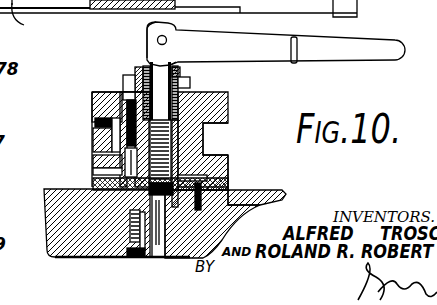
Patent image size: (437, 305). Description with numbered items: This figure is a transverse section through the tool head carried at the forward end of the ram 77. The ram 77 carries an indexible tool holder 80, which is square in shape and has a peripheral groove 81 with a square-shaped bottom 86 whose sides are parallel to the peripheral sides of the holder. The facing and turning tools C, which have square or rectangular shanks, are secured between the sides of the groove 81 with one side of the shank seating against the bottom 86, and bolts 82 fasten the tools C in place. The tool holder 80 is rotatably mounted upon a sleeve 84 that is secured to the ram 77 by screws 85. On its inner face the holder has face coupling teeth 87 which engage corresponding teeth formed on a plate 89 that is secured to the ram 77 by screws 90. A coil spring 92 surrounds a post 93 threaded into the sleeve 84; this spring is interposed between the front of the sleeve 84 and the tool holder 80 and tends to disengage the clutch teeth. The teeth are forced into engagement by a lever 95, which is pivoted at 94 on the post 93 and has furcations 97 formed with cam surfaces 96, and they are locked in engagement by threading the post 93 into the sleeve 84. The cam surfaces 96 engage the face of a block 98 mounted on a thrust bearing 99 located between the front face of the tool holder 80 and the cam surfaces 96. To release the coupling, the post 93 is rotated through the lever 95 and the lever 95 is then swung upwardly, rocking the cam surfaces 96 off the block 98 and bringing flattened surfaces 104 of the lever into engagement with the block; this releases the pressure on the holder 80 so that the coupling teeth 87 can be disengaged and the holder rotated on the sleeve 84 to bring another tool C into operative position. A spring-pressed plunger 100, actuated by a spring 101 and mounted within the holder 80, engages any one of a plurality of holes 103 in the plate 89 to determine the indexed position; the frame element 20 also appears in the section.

The frame 20 is at (31, 19).
The ram 77 is at (60, 205).
The tool holder 80 is at (232, 107).
The peripheral groove 81 is at (213, 133).
The bolts 82 is at (97, 123).
The sleeve 84 is at (158, 248).
The screws 85 is at (130, 258).
The square-shaped bottom 86 is at (205, 146).
The face coupling teeth 87 is at (233, 173).
The plate 89 is at (237, 190).
The screws 90 is at (232, 192).
The coil spring 92 is at (128, 118).
The post 93 is at (142, 80).
The pivot 94 is at (168, 36).
The lever 95 is at (312, 53).
The cam surfaces 96 is at (168, 62).
The furcations 97 is at (152, 52).
The block 98 is at (180, 73).
The thrust bearing 99 is at (190, 85).
The spring-pressed plunger 100 is at (123, 157).
The spring 101 is at (143, 92).
The holes 103 is at (130, 192).
The flattened surfaces 104 is at (145, 37).
The tools C is at (93, 137).